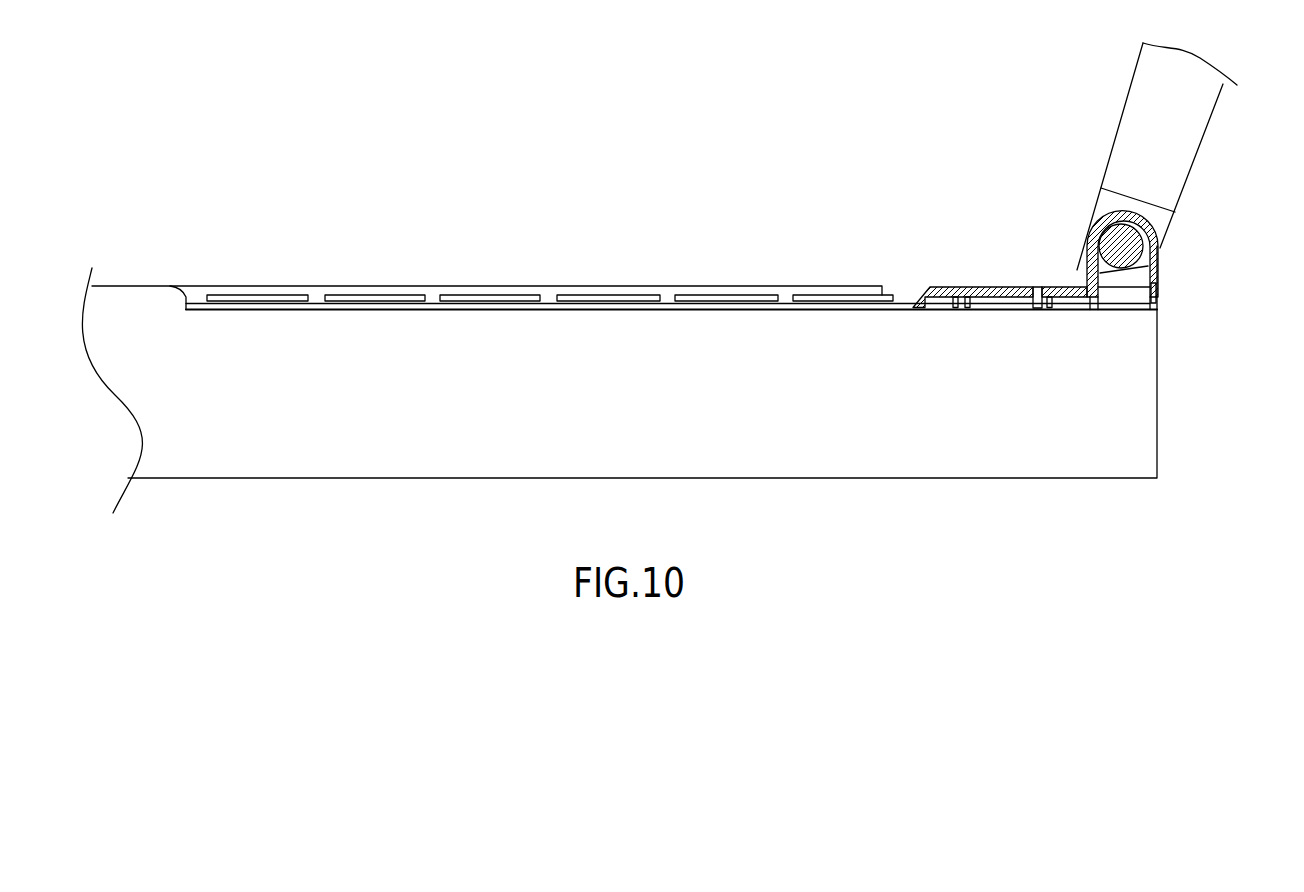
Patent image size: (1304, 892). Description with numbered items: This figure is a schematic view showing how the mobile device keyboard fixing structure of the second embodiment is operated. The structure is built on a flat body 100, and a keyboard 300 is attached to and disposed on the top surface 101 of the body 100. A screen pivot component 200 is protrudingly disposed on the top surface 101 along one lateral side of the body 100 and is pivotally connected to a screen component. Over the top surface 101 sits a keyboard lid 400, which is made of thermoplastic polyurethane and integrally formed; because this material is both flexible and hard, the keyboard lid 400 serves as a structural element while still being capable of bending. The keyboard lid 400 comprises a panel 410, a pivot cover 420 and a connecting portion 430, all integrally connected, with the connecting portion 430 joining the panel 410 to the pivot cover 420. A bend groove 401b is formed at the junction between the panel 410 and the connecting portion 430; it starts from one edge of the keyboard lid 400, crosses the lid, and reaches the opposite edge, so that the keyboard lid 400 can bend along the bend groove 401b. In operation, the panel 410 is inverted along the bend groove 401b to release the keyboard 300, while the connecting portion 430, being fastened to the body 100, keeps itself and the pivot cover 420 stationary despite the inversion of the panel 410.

The body 100 is at (1012, 445).
The top surface 101 is at (327, 285).
The screen pivot component 200 is at (1127, 300).
The keyboard 300 is at (482, 302).
The keyboard lid 400 is at (998, 276).
The bend groove 401b is at (1038, 283).
The panel 410 is at (968, 283).
The pivot cover 420 is at (1150, 212).
The connecting portion 430 is at (1057, 283).